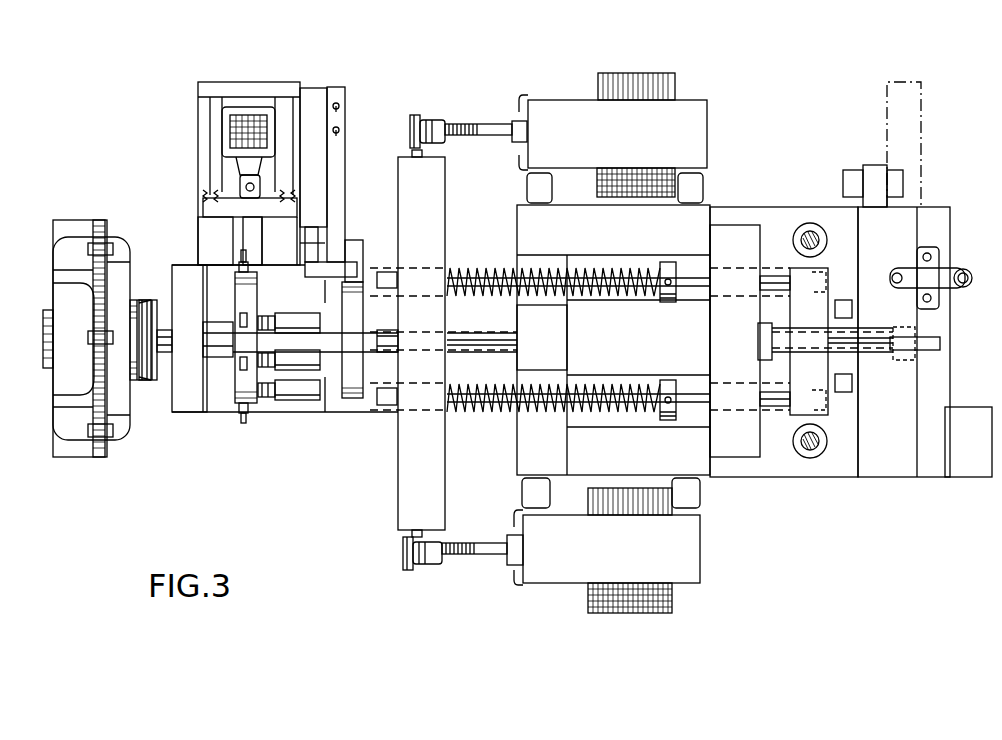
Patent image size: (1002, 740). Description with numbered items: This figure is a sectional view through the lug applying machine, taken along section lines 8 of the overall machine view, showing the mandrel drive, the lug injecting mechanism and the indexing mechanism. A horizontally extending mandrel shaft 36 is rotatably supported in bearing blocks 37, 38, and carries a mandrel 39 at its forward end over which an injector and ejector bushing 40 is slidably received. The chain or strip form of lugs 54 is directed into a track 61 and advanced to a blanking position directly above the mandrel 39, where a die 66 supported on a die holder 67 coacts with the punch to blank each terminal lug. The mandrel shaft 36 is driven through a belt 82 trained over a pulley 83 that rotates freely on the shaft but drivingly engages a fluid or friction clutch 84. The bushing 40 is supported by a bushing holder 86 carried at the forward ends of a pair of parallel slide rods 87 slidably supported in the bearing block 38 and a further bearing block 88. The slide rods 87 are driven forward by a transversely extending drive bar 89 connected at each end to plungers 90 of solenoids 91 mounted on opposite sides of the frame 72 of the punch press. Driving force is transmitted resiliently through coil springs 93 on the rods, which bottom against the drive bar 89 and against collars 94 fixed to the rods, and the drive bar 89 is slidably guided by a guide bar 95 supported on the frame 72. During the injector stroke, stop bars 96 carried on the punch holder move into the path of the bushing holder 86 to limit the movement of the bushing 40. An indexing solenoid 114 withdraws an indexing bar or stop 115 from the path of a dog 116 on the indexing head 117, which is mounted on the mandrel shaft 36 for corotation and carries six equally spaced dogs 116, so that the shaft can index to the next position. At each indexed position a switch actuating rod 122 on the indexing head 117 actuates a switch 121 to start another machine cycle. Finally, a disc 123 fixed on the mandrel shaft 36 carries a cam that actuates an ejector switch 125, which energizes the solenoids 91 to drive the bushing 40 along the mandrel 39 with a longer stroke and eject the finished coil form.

The section line 8- 8 is at (340, 274).
The mandrel shaft 36 is at (378, 356).
The bearing block 37 is at (186, 400).
The bearing block 38 is at (740, 480).
The mandrel 39 is at (848, 346).
The injector and ejector bushing 40 is at (855, 322).
The chain or strip form of lugs 54 is at (918, 107).
The track 61 is at (898, 225).
The die 66 is at (903, 362).
The die holder 67 is at (900, 465).
The frame 72 is at (695, 225).
The belt 82 is at (148, 382).
The pulley 83 is at (150, 298).
The fluid or friction clutch 84 is at (83, 220).
The bushing holder 86 is at (782, 415).
The slide rods 87 is at (768, 272).
The bearing block 88 is at (522, 420).
The drive bar 89 is at (410, 512).
The plungers 90 is at (478, 124).
The solenoids 91 is at (568, 113).
The coil springs 93 is at (482, 263).
The collars 94 is at (670, 262).
The guide bar 95 is at (500, 337).
The stop bars 96 is at (835, 307).
The indexing solenoid 114 is at (250, 115).
The indexing bar or stop 115 is at (242, 248).
The dog 116 is at (238, 278).
The indexing head 117 is at (235, 398).
The switch 121 is at (305, 255).
The switch actuating rod 122 is at (298, 320).
The disc 123 is at (355, 400).
The ejector switch 125 is at (355, 240).